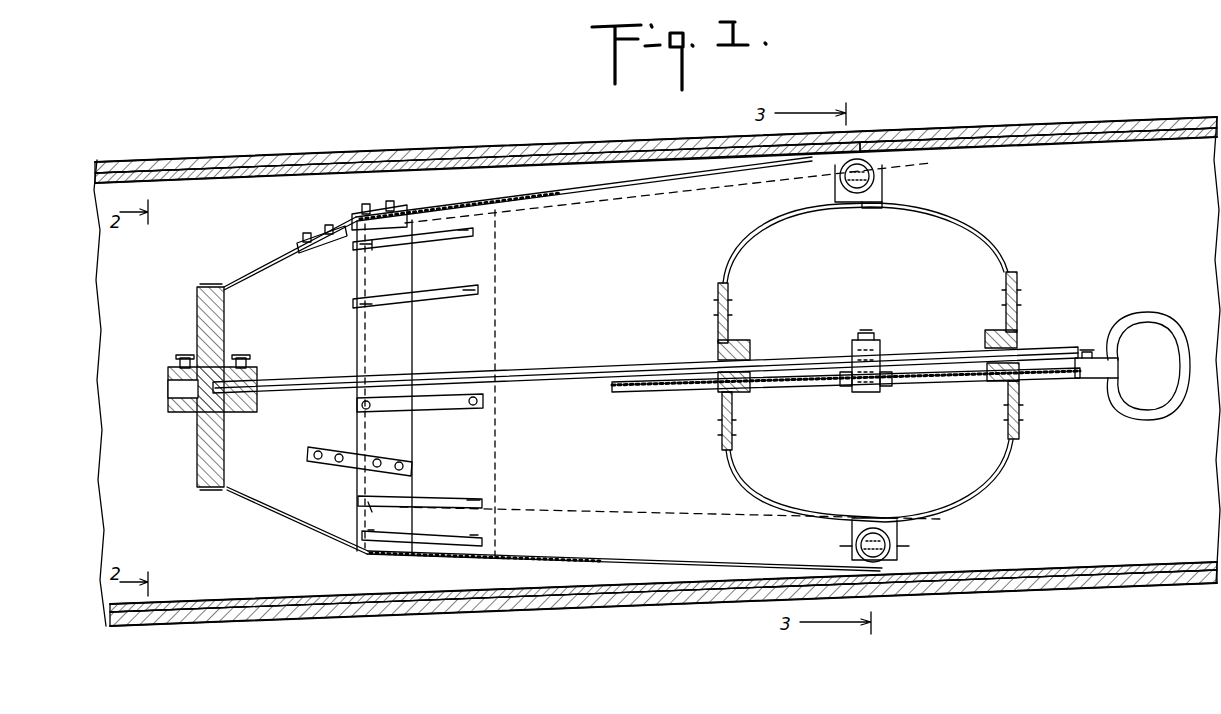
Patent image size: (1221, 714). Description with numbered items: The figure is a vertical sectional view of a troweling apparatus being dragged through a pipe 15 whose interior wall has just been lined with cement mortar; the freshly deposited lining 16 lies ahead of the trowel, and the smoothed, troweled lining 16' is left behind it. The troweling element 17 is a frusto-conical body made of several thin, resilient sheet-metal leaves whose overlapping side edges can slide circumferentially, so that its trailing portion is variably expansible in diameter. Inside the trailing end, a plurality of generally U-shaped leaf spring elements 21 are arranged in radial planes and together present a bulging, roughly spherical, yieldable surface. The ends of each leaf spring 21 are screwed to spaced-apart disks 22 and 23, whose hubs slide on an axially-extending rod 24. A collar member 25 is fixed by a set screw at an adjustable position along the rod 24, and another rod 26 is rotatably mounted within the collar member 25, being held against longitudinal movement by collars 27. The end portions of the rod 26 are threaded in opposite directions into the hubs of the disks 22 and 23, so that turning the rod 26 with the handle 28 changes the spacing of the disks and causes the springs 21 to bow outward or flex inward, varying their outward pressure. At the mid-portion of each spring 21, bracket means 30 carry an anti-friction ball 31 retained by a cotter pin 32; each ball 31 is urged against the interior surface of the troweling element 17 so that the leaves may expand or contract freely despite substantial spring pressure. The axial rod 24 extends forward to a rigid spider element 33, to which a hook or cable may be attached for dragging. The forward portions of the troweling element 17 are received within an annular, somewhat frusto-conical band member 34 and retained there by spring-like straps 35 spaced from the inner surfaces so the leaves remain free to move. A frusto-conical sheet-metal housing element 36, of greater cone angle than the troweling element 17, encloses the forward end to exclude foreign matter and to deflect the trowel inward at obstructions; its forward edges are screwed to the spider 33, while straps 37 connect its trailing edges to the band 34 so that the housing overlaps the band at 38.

The pipe 15 is at (438, 151).
The lining 16 is at (477, 149).
The troweled lining 16' is at (1038, 120).
The troweling element 17 is at (653, 206).
The leaf spring elements 21 is at (795, 218).
The disk 22 is at (735, 332).
The disk 23 is at (1004, 310).
The axially-extending rod 24 is at (813, 356).
The collar member 25 is at (880, 340).
The rod 26 is at (912, 382).
The collars 27 is at (890, 387).
The handle 28 is at (1125, 322).
The bracket means 30 is at (883, 196).
The balls 31 is at (836, 195).
The cotter pins 32 is at (836, 182).
The spider element 33 is at (217, 342).
The annular band member 34 is at (419, 210).
The straps 35 is at (441, 288).
The housing element 36 is at (249, 265).
The straps 37 is at (345, 250).
The overlap 38 is at (351, 212).